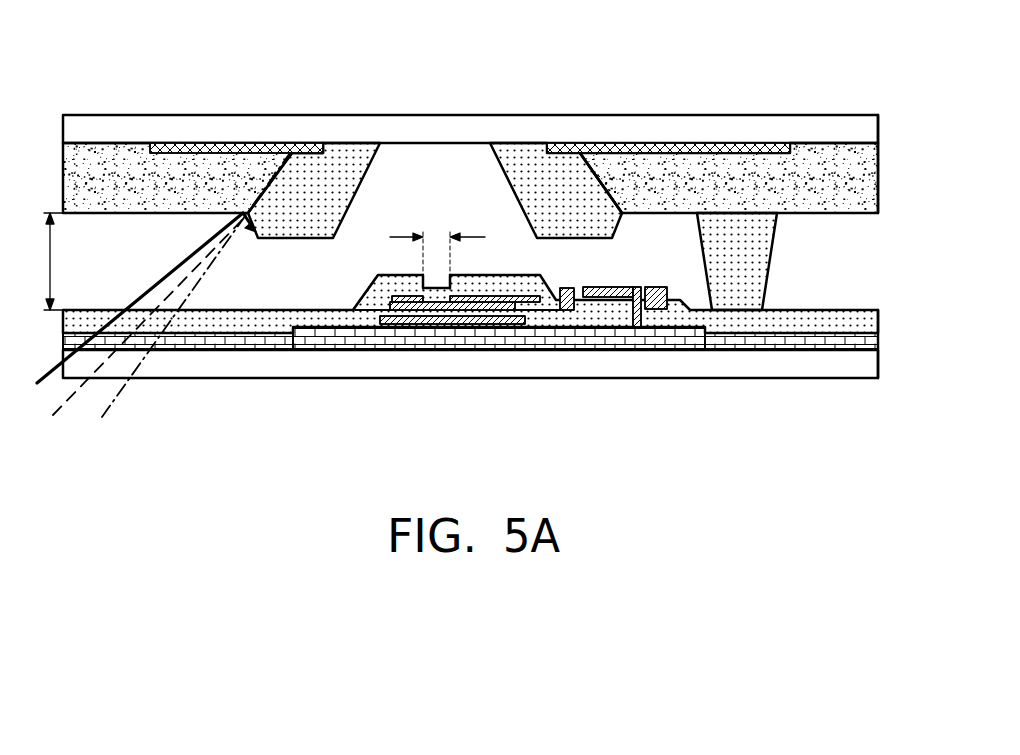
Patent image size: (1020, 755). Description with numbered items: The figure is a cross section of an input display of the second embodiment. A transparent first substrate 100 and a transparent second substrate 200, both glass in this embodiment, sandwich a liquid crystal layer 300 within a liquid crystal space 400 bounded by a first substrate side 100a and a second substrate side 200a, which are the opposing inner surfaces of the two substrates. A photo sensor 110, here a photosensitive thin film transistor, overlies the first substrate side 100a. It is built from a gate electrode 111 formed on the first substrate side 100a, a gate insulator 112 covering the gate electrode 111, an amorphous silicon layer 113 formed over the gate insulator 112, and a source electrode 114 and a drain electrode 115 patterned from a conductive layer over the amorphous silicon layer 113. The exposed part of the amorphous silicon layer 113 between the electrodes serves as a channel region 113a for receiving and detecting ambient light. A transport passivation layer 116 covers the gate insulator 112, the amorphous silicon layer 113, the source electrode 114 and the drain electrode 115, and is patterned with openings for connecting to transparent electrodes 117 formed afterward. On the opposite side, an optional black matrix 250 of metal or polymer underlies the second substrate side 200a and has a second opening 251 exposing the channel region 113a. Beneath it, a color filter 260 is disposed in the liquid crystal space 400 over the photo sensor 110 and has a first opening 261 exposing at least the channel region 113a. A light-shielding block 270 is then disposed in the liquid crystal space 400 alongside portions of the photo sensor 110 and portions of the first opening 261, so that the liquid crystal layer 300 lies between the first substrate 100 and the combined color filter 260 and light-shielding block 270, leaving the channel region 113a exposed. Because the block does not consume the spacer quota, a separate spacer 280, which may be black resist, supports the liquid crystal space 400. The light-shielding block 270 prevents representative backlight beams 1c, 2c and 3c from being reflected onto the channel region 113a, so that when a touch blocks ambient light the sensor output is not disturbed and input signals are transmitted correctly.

The first substrate 100 is at (782, 370).
The first substrate side 100a is at (878, 353).
The photo sensor 110 is at (470, 348).
The gate electrode 111 is at (505, 325).
The gate insulator 112 is at (440, 318).
The amorphous silicon layer 113 is at (522, 302).
The channel region 113a is at (437, 246).
The source electrode 114 is at (585, 330).
The drain electrode 115 is at (393, 305).
The transport passivation layer 116 is at (372, 308).
The transparent electrodes 117 is at (641, 368).
The light beam 1c is at (48, 386).
The light beam 2c is at (73, 397).
The light beam 3c is at (128, 395).
The second substrate 200 is at (428, 128).
The second substrate side 200a is at (878, 141).
The black matrix 250 is at (208, 150).
The second opening 251 is at (556, 140).
The color filter 260 is at (101, 165).
The first opening 261 is at (612, 175).
The light-shielding block 270 is at (333, 152).
The spacer 280 is at (716, 256).
The liquid crystal layer 300 is at (817, 262).
The liquid crystal space 400 is at (47, 261).